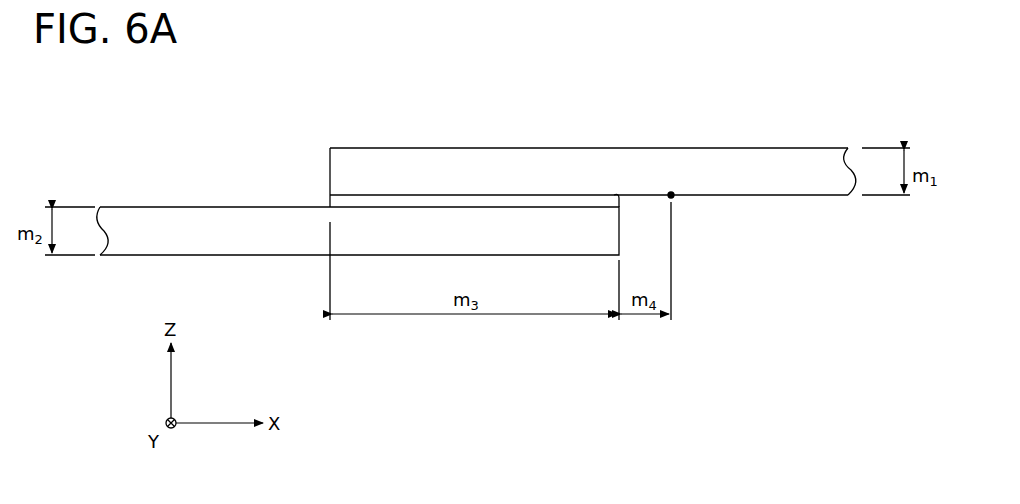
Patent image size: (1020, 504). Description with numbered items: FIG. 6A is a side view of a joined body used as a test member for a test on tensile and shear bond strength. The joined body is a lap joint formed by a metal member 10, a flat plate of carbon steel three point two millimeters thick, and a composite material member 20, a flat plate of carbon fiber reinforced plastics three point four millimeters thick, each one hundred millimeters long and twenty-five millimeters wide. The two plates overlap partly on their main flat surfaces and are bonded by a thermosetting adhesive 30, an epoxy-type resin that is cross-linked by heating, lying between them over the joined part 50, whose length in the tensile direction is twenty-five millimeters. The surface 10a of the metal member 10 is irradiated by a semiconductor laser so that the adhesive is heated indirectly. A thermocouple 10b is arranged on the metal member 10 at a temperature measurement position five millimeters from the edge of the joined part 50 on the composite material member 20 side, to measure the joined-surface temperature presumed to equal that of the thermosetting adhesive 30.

The metal member 10 is at (781, 147).
The surface of the metal member 10a is at (362, 148).
The thermocouple 10b is at (687, 205).
The composite material member 20 is at (149, 207).
The thermosetting adhesive 30 is at (342, 204).
The joined part 50 is at (616, 126).